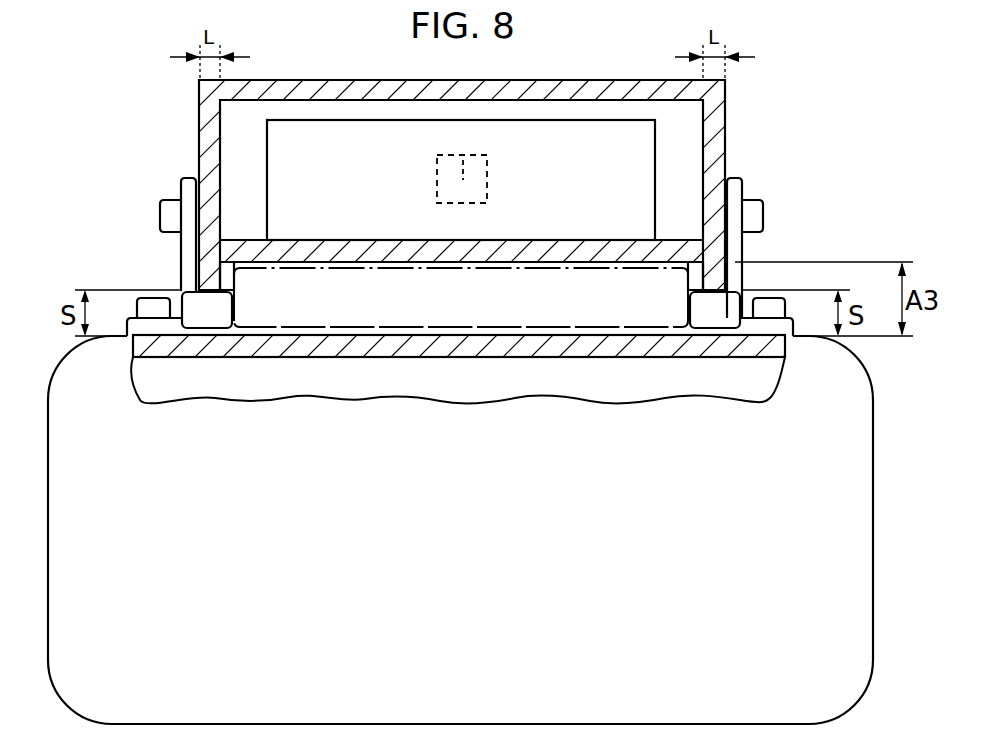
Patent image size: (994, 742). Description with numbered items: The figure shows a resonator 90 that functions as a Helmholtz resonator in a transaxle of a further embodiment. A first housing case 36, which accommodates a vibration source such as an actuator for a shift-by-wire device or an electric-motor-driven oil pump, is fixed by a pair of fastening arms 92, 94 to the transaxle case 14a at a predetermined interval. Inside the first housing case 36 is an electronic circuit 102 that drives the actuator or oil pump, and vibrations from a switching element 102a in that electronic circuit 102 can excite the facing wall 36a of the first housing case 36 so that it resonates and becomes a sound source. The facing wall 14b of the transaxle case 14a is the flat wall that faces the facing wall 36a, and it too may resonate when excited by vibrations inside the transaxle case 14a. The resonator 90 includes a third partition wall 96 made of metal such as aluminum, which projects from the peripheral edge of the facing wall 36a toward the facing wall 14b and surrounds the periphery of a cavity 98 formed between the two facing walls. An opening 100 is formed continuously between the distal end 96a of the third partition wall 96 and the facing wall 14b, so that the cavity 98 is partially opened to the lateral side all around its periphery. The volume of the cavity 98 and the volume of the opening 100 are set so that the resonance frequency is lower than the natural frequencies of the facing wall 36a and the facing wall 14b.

The first housing case 36 is at (748, 93).
The facing wall of the first housing case 36a is at (538, 252).
The resonator 90 is at (172, 277).
The fastening arm 92 is at (188, 189).
The fastening arm 94 is at (737, 190).
The third partition wall 96 is at (728, 274).
The distal end of the third partition wall 96a is at (724, 297).
The cavity 98 is at (390, 322).
The opening 100 is at (226, 306).
The electronic circuit 102 is at (597, 143).
The switching element 102a is at (470, 157).
The transaxle case 14a is at (86, 385).
The facing wall of the transaxle case 14b is at (424, 348).